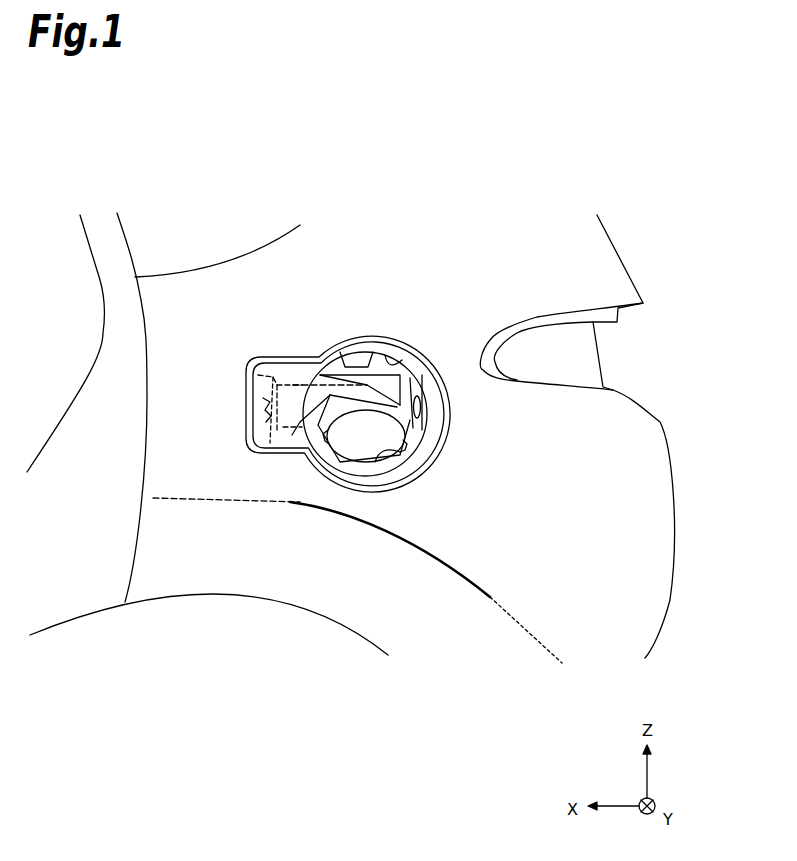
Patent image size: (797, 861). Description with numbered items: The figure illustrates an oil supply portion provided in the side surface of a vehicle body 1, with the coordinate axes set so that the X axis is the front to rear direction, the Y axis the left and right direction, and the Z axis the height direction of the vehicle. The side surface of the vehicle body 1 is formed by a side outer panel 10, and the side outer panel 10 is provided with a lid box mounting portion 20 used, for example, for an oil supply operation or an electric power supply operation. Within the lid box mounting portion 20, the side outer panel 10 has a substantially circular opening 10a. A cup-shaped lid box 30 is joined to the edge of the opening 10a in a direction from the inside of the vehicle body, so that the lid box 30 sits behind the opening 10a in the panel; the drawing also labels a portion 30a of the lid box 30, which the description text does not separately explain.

The vehicle body 1 is at (603, 197).
The side outer panel 10 is at (490, 523).
The opening 10a is at (397, 367).
The lid box mounting portion 20 is at (393, 323).
The lid box 30 is at (405, 423).
The sensor detection portion 30a is at (402, 457).